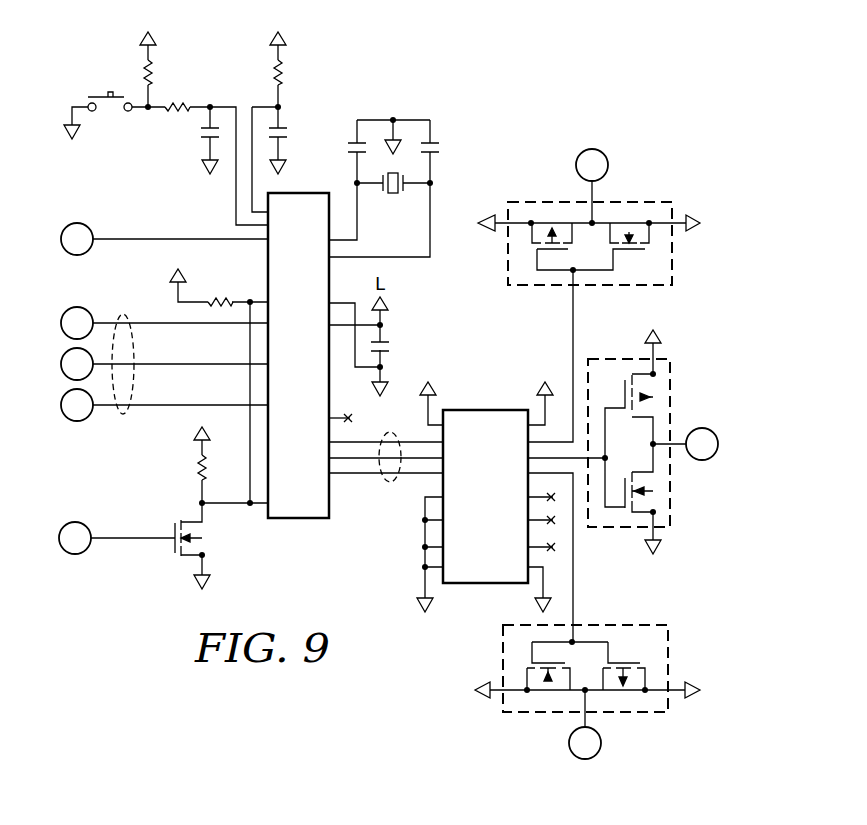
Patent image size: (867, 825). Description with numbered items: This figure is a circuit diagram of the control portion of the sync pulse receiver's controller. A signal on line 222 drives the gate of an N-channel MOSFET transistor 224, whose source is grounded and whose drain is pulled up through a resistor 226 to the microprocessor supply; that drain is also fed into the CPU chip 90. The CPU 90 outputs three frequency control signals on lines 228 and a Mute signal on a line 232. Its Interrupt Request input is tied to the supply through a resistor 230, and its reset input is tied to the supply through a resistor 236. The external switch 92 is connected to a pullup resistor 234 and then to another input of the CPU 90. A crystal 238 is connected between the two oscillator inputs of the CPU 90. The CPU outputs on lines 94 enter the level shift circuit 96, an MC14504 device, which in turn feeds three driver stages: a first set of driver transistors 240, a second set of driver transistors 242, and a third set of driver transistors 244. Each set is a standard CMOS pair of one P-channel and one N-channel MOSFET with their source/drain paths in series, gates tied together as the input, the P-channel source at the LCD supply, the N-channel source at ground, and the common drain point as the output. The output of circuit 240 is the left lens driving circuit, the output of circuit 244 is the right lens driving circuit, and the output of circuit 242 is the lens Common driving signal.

The CPU chip 90 is at (287, 383).
The external switch 92 is at (102, 95).
The lines 94 is at (390, 485).
The level shift circuit 96 is at (474, 533).
The line 222 is at (145, 540).
The N-channel MOSFET transistor 224 is at (172, 525).
The resistor 226 is at (196, 470).
The lines 228 is at (122, 316).
The resistor 230 is at (222, 298).
The line 232 is at (124, 238).
The pullup resistor 234 is at (152, 72).
The resistor 236 is at (282, 72).
The crystal 238 is at (393, 196).
The first set of driver transistors 240 is at (650, 202).
The second set of driver transistors 242 is at (672, 505).
The set of driver transistors 244 is at (672, 650).